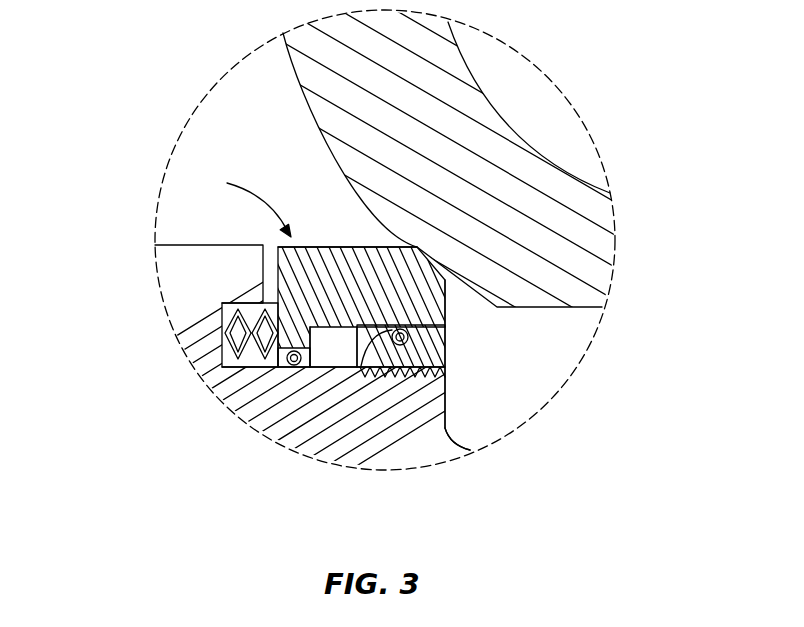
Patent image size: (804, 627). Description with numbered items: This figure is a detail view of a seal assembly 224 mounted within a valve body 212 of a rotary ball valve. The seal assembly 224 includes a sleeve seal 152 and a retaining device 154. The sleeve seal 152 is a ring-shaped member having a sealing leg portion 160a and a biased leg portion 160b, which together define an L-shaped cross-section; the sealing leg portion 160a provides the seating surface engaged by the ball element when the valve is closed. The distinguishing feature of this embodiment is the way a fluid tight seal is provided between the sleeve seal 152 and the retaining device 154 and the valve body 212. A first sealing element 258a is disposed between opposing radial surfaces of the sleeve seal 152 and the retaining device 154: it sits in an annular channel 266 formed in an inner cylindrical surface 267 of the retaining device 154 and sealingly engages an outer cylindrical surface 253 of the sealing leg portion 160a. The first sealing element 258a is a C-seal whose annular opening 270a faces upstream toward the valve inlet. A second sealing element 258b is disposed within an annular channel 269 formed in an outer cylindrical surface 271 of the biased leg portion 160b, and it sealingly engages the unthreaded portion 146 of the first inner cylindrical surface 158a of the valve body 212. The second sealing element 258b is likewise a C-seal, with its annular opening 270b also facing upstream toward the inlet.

The unthreaded portion 146 is at (203, 371).
The sleeve seal 152 is at (400, 270).
The retaining device 154 is at (447, 335).
The first inner cylindrical surface 158a is at (447, 357).
The sealing leg portion 160a is at (405, 270).
The biased leg portion 160b is at (278, 306).
The valve body 212 is at (193, 272).
The seal assembly 224 is at (240, 205).
The outer cylindrical surface 253 is at (447, 333).
The first sealing element 258a is at (410, 360).
The second sealing element 258b is at (307, 362).
The annular channel 266 is at (308, 368).
The inner cylindrical surface 267 is at (394, 346).
The annular channel 269 is at (305, 345).
The annular opening 270a is at (373, 360).
The annular opening 270b is at (286, 368).
The outer cylindrical surface 271 is at (353, 330).